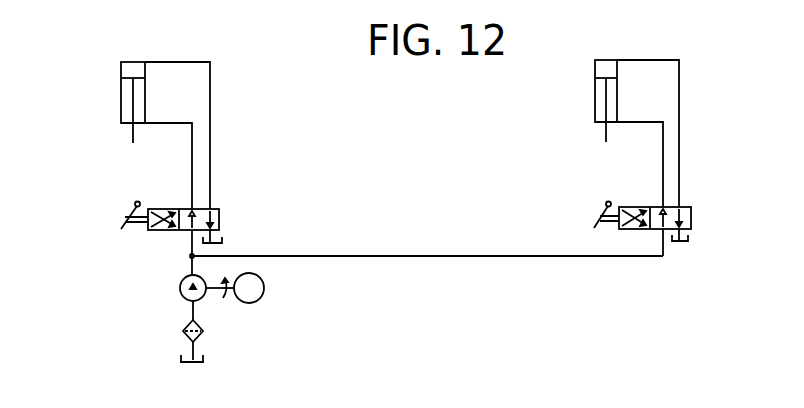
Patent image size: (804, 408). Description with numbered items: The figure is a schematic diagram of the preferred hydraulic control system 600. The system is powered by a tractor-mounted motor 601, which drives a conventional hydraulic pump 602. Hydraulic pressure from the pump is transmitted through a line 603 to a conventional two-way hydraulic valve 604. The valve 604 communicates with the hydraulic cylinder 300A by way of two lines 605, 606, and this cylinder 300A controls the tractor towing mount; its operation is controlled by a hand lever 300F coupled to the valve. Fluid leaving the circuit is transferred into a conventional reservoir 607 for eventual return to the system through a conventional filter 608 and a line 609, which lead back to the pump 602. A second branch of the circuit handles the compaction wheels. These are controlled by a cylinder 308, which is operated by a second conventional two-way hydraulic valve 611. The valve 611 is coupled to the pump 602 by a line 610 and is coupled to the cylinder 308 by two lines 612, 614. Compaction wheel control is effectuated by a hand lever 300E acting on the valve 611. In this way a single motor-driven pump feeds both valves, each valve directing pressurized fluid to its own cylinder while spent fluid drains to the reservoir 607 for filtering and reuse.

The hydraulic control system 600 is at (433, 167).
The motor 601 is at (265, 288).
The hydraulic pump 602 is at (180, 288).
The line 603 is at (190, 245).
The two-way hydraulic valve 604 is at (219, 216).
The line 605 is at (192, 168).
The line 606 is at (210, 100).
The reservoir 607 is at (181, 358).
The filter 608 is at (204, 331).
The line 609 is at (193, 313).
The line 610 is at (550, 257).
The two-way hydraulic valve 611 is at (691, 215).
The line 612 is at (663, 165).
The line 614 is at (679, 100).
The hydraulic cylinder 300A is at (121, 70).
The cylinder 308 is at (603, 63).
The hand lever 300F is at (124, 227).
The hand lever 300E is at (596, 219).